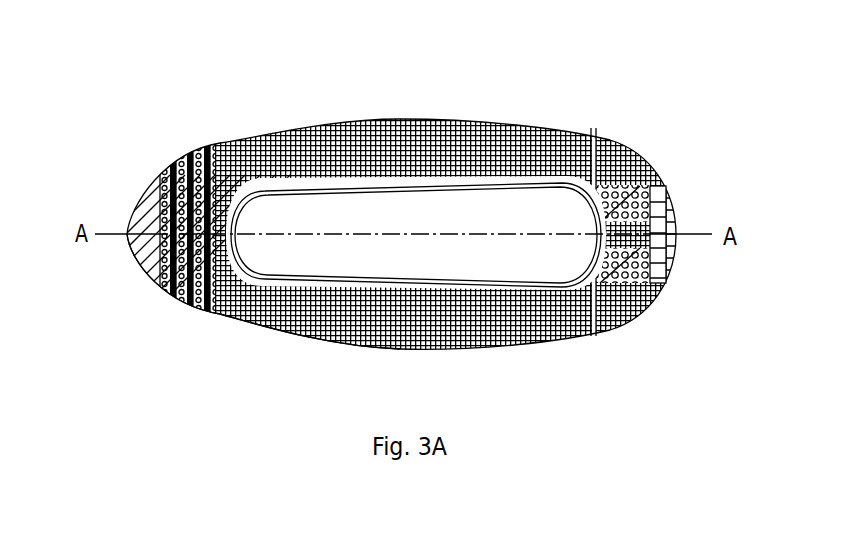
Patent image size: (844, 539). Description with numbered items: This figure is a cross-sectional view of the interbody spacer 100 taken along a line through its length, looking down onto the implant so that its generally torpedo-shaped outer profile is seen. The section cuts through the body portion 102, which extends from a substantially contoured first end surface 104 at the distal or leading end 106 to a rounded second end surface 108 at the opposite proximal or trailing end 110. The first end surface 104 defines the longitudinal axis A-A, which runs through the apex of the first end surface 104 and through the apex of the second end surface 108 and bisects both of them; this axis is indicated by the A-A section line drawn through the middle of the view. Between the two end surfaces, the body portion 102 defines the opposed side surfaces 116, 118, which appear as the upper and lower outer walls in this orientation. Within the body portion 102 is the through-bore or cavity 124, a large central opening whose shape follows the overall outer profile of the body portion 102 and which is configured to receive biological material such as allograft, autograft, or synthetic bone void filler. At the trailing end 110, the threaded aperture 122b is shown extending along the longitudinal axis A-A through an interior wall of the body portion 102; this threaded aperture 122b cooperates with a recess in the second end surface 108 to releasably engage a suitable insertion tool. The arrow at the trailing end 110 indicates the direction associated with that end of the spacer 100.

The interbody spacer 100 is at (585, 77).
The body portion 102 is at (280, 345).
The first end surface 104 is at (128, 248).
The distal or leading end 106 is at (121, 174).
The second end surface 108 is at (667, 187).
The proximal or trailing end 110 is at (695, 290).
The side surface 116 is at (360, 120).
The side surface 118 is at (407, 350).
The threaded aperture 122b is at (650, 234).
The through-bore or cavity 124 is at (352, 228).